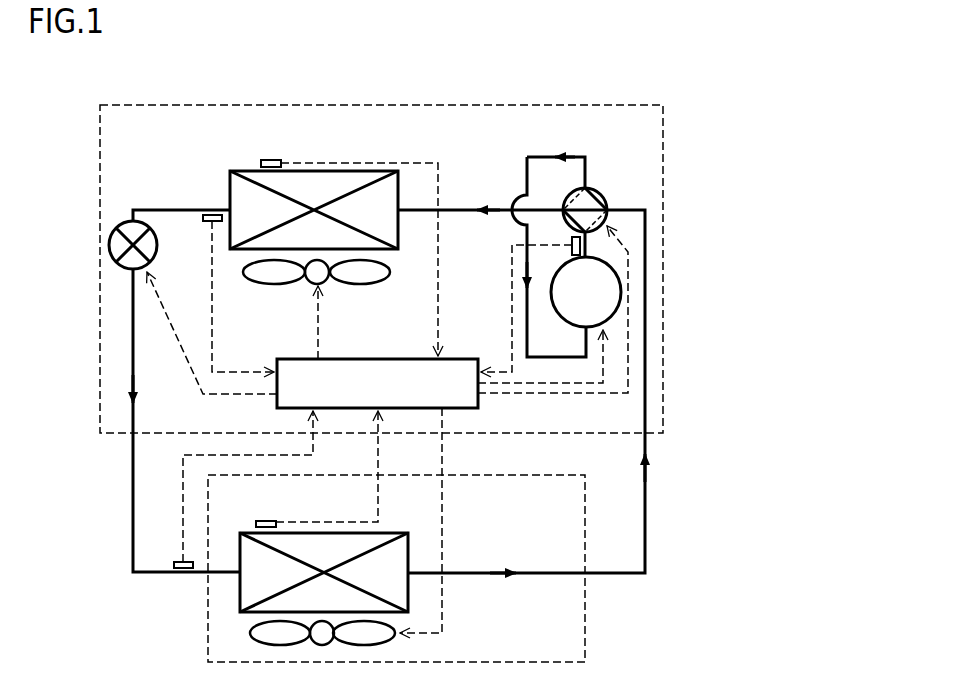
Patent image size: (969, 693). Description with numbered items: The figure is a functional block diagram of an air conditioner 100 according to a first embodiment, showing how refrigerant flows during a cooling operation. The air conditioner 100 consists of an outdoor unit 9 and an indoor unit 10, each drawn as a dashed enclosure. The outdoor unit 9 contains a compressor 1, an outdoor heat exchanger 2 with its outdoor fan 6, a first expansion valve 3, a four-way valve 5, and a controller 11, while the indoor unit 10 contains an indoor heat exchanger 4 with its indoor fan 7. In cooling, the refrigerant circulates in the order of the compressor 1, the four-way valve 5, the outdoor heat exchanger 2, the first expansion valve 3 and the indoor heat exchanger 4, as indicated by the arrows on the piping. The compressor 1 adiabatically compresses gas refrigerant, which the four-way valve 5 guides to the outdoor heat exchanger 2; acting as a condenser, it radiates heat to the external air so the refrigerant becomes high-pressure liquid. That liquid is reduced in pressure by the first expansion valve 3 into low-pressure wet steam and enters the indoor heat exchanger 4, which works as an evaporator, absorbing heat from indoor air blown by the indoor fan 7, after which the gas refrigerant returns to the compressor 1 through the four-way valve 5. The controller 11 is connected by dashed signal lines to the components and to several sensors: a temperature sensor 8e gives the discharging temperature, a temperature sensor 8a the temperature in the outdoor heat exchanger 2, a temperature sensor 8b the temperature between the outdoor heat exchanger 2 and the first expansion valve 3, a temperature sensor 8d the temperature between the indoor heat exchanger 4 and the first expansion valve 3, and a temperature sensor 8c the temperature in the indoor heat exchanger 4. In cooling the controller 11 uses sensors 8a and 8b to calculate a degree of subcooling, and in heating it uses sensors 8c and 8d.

The air conditioner 100 is at (102, 76).
The compressor 1 is at (571, 322).
The outdoor heat exchanger 2 is at (230, 186).
The first expansion valve 3 is at (128, 221).
The indoor heat exchanger 4 is at (392, 533).
The four-way valve 5 is at (601, 195).
The outdoor fan 6 is at (283, 282).
The indoor fan 7 is at (250, 636).
The temperature sensor 8a is at (271, 158).
The temperature sensor 8b is at (204, 221).
The temperature sensor 8c is at (265, 520).
The temperature sensor 8d is at (178, 561).
The temperature sensor 8e is at (572, 243).
The outdoor unit 9 is at (622, 105).
The indoor unit 10 is at (552, 475).
The controller 11 is at (454, 359).